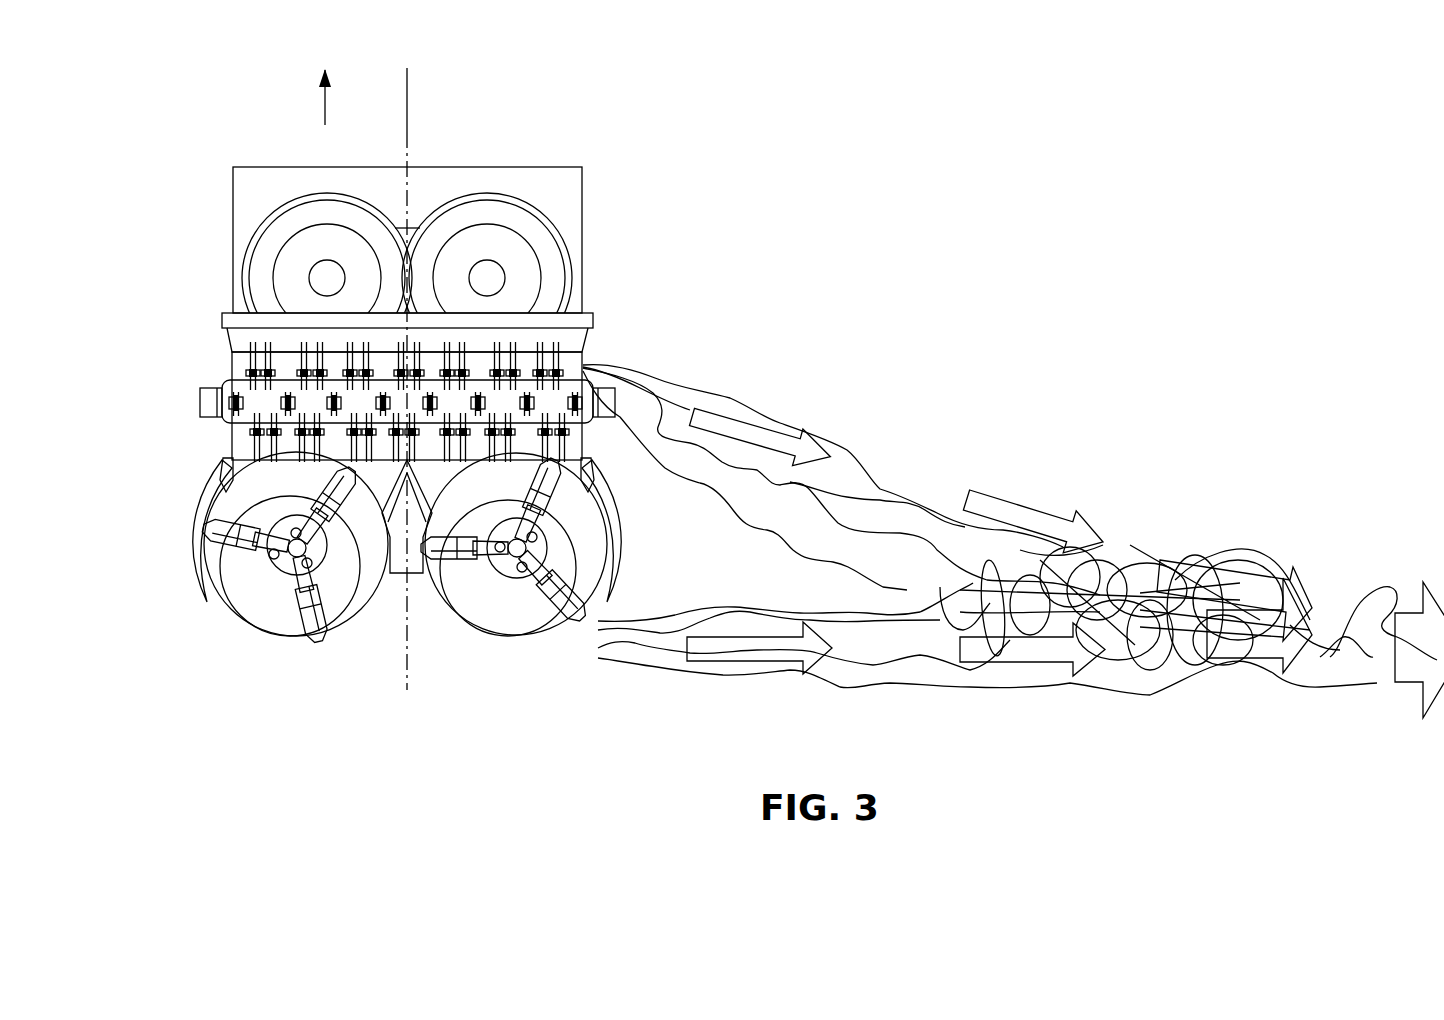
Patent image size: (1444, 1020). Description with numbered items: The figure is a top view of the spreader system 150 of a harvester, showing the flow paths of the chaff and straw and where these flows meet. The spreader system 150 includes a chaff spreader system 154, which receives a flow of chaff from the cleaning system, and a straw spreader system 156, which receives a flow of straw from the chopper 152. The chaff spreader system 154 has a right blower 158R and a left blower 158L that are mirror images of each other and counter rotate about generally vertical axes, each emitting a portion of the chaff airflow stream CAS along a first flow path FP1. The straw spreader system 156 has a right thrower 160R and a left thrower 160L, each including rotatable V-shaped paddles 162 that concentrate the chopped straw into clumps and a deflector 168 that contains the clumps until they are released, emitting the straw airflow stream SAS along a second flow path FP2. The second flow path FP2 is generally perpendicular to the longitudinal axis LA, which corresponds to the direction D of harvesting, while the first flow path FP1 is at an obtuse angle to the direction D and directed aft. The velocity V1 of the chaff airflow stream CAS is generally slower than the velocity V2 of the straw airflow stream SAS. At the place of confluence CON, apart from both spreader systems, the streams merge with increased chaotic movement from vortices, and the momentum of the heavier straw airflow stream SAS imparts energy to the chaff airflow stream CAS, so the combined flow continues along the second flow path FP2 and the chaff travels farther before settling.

The spreader system 150 is at (605, 137).
The chopper 152 is at (188, 395).
The chaff spreader system 154 is at (593, 233).
The straw spreader system 156 is at (182, 523).
The left blower 158L is at (312, 192).
The right blower 158R is at (491, 192).
The left thrower 160L is at (350, 648).
The right thrower 160R is at (473, 648).
The V-shaped paddle 162 is at (292, 600).
The deflector 168 is at (297, 633).
The direction D is at (325, 107).
The longitudinal axis LA is at (407, 105).
The chaff airflow stream CAS is at (858, 452).
The straw airflow stream SAS is at (842, 663).
The velocity of the chaff airflow stream V1 is at (993, 490).
The velocity of the straw airflow stream V2 is at (1040, 662).
The first flow path FP1 is at (1027, 500).
The second flow path FP2 is at (1017, 662).
The place of confluence CON is at (1150, 558).